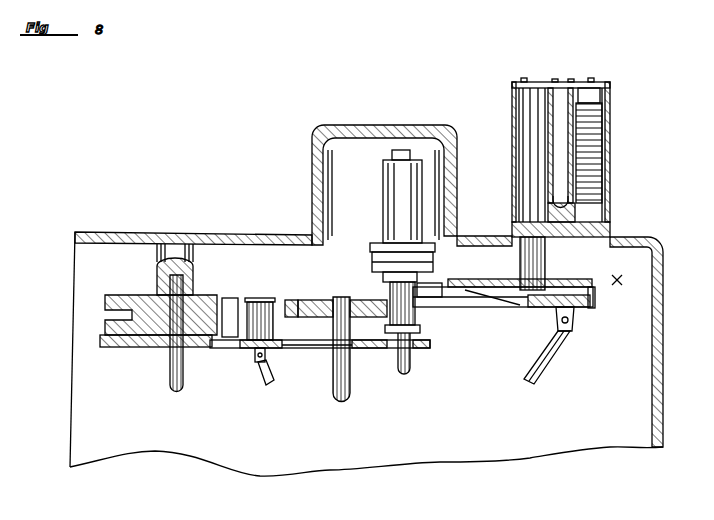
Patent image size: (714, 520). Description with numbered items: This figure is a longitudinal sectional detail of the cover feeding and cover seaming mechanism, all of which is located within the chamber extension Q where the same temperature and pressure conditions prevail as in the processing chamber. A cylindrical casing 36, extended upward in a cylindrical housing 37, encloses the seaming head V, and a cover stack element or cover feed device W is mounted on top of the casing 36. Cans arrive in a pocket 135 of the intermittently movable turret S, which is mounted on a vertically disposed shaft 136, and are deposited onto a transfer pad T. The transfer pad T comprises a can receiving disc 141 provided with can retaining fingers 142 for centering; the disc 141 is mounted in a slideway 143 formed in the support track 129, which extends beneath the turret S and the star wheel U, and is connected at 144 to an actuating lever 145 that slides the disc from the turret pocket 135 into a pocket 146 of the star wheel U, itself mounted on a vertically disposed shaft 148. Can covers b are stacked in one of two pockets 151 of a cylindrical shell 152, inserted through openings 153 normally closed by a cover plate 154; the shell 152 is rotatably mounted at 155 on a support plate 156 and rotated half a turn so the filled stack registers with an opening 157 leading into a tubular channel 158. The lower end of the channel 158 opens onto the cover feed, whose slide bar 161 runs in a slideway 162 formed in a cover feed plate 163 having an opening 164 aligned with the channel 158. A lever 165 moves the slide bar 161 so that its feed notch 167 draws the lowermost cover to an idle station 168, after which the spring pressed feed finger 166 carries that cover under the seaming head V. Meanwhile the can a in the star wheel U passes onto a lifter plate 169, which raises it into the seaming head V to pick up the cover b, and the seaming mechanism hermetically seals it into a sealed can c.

The cylindrical casing 36 is at (657, 352).
The cylindrical housing 37 is at (364, 126).
The seaming head V is at (383, 250).
The sealed can c is at (416, 312).
The lifter plate 169 is at (421, 330).
The idle station 168 is at (466, 283).
The cover feed plate 163 is at (485, 279).
The slide bar 161 is at (582, 293).
The slideway 162 is at (593, 303).
The feed notch 167 is at (572, 280).
The spring pressed feed finger 166 is at (492, 300).
The opening 164 is at (506, 300).
The lever 165 is at (548, 362).
The tubular channel 158 is at (547, 261).
The support plate 156 is at (612, 226).
The cylindrical shell 152 is at (612, 120).
The openings 153 is at (524, 78).
The cover plate 154 is at (554, 79).
The pockets 151 is at (530, 100).
The cover feed device W is at (573, 200).
The opening 157 is at (512, 222).
The can covers b is at (598, 146).
The rotatable mounting 155 is at (610, 202).
The turret S is at (138, 296).
The support track 129 is at (104, 348).
The shaft 136 is at (172, 378).
The pocket 135 is at (230, 298).
The can a is at (259, 298).
The transfer pad T is at (252, 349).
The can retaining fingers 142 is at (280, 340).
The slideway 143 is at (310, 349).
The can receiving disc 141 is at (297, 349).
The connection 144 is at (256, 352).
The actuating lever 145 is at (268, 372).
The pocket 146 is at (291, 300).
The star wheel U is at (314, 300).
The shaft 148 is at (348, 388).
The chamber extension Q is at (487, 440).